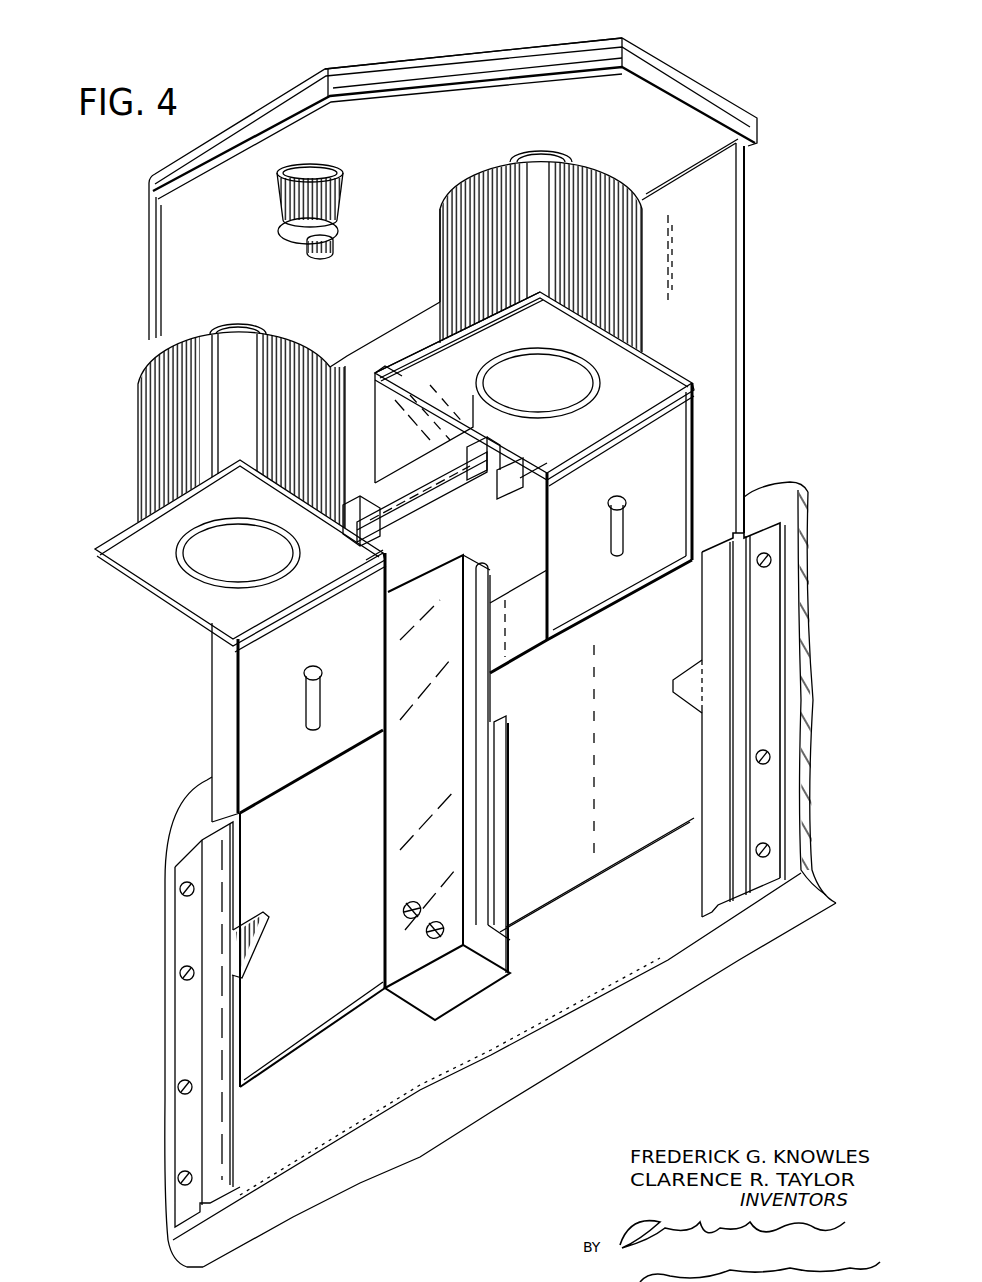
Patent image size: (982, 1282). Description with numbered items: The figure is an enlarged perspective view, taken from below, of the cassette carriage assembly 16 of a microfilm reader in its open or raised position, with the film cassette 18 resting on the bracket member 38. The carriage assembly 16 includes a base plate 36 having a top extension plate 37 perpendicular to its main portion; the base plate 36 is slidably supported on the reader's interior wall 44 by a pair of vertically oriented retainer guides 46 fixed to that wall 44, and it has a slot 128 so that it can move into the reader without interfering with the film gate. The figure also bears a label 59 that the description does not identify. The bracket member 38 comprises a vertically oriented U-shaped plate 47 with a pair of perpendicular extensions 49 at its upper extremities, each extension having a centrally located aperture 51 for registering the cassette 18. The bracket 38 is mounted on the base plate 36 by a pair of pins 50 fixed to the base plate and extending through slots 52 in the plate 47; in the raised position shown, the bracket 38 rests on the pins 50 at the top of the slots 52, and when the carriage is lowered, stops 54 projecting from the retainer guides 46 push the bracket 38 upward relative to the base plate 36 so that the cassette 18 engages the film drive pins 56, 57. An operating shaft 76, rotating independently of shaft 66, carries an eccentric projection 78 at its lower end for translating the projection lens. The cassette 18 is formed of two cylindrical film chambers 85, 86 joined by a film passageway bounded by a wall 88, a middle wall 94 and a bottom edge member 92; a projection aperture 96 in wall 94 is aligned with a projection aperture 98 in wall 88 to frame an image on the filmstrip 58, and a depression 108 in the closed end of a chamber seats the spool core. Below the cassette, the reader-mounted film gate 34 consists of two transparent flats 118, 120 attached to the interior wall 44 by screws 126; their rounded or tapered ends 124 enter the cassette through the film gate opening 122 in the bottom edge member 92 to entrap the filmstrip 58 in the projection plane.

The carriage assembly 16 is at (745, 93).
The film cassette 18 is at (122, 373).
The film gate 34 is at (370, 875).
The base plate 36 is at (730, 220).
The top extension plate 37 is at (230, 178).
The bracket member 38 is at (566, 618).
The interior wall 44 is at (801, 575).
The retainer guides 46 is at (770, 675).
The U-shaped plate 47 is at (245, 750).
The perpendicular extensions 49 is at (600, 365).
The pins 50 is at (617, 500).
The aperture 51 is at (593, 377).
The slots 52 is at (622, 545).
The stops 54 is at (676, 685).
The film drive pin 56 is at (541, 152).
The film drive pin 57 is at (255, 323).
The filmstrip 58 is at (393, 420).
The top edge 59 is at (306, 90).
The shaft 66 is at (313, 168).
The operating shaft 76 is at (283, 236).
The eccentric projection 78 is at (319, 258).
The film chamber 85 is at (567, 157).
The film chamber 86 is at (239, 322).
The wall 88 is at (423, 284).
The bottom edge member 92 is at (540, 467).
The wall 94 is at (488, 510).
The projection aperture 96 is at (388, 530).
The projection aperture 98 is at (383, 368).
The depression 108 is at (563, 400).
The flat 118 is at (500, 940).
The flat 120 is at (396, 773).
The film gate opening 122 is at (458, 512).
The rounded or tapered ends 124 is at (494, 568).
The screws 126 is at (402, 928).
The slot 128 is at (500, 800).